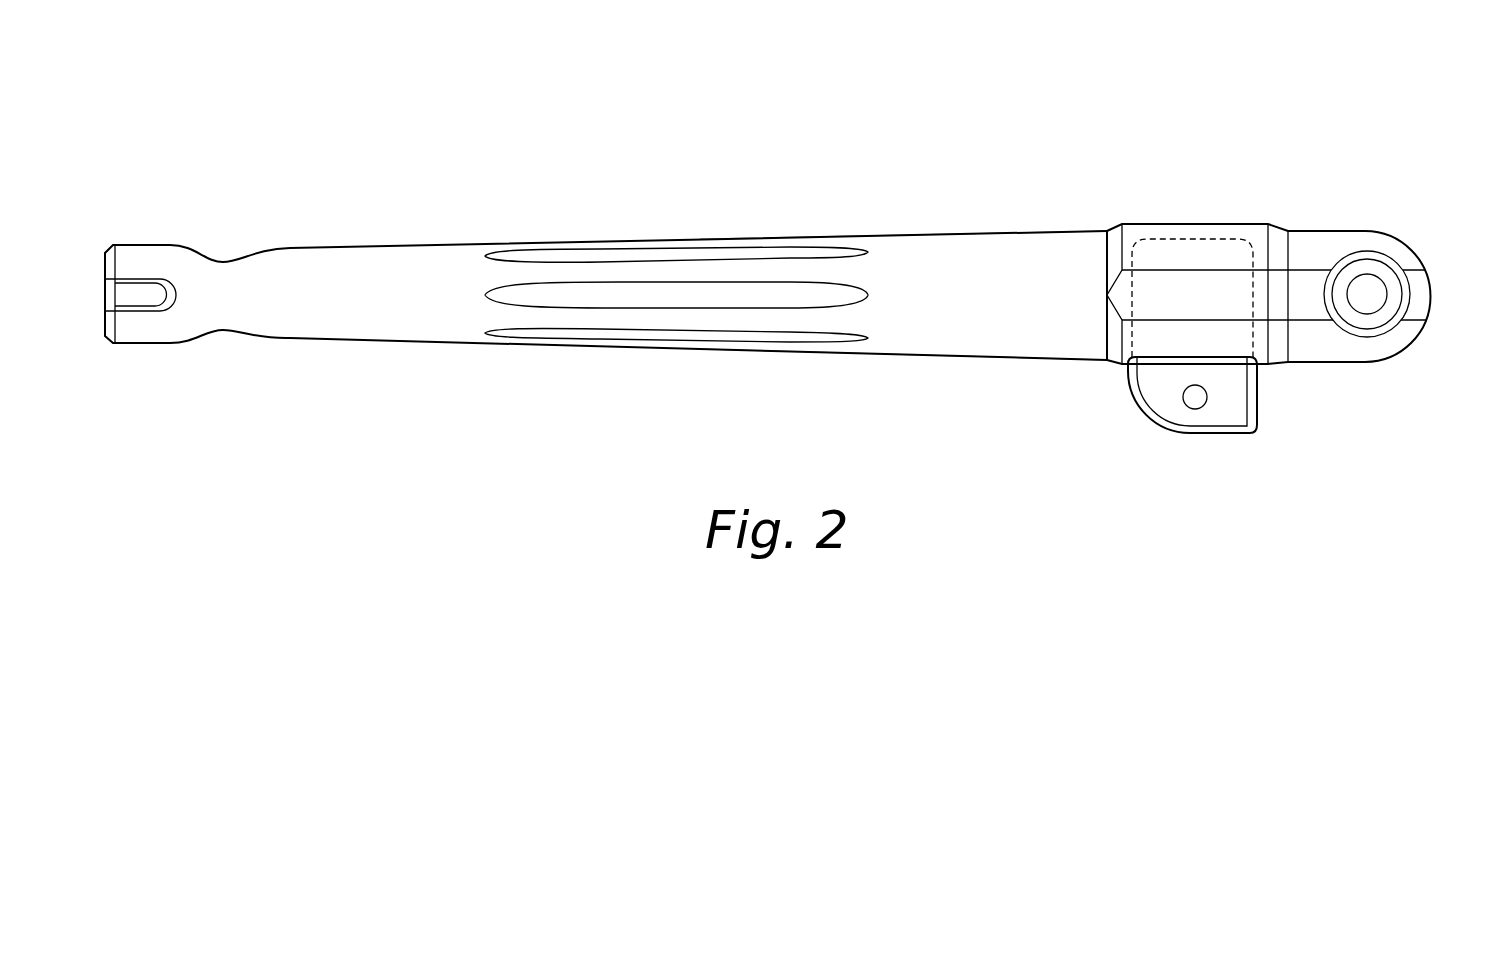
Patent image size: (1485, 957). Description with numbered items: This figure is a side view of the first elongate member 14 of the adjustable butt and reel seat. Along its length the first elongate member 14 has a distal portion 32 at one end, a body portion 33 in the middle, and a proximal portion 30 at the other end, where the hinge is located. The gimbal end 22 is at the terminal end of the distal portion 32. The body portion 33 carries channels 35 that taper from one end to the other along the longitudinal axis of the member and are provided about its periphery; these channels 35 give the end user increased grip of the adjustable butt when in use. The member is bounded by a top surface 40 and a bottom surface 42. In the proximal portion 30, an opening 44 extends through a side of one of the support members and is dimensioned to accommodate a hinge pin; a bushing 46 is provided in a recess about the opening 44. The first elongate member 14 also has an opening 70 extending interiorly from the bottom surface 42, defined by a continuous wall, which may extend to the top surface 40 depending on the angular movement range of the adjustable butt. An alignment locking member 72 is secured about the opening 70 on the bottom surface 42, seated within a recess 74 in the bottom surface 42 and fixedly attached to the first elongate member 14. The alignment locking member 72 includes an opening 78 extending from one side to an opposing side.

The first elongate member 14 is at (443, 382).
The gimbal end 22 is at (158, 356).
The proximal portion 30 is at (1428, 112).
The distal portion 32 is at (458, 112).
The body portion 33 is at (1043, 112).
The channels 35 is at (640, 295).
The top surface 40 is at (995, 230).
The bottom surface 42 is at (975, 358).
The opening 44 is at (1368, 292).
The bushing 46 is at (1353, 275).
The opening 70 is at (1210, 240).
The alignment locking member 72 is at (1233, 446).
The recess 74 is at (1197, 358).
The opening 78 is at (1193, 399).